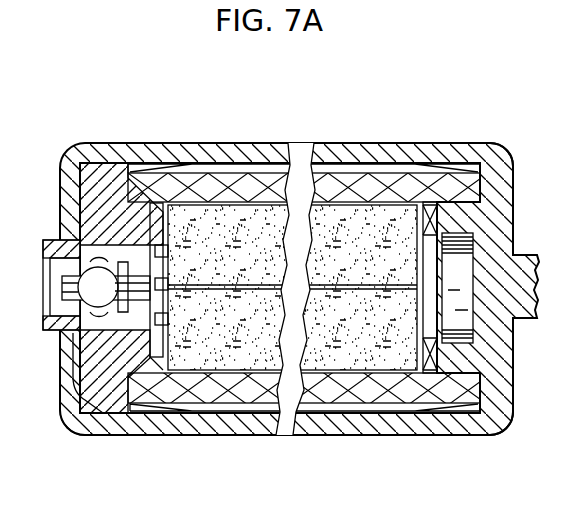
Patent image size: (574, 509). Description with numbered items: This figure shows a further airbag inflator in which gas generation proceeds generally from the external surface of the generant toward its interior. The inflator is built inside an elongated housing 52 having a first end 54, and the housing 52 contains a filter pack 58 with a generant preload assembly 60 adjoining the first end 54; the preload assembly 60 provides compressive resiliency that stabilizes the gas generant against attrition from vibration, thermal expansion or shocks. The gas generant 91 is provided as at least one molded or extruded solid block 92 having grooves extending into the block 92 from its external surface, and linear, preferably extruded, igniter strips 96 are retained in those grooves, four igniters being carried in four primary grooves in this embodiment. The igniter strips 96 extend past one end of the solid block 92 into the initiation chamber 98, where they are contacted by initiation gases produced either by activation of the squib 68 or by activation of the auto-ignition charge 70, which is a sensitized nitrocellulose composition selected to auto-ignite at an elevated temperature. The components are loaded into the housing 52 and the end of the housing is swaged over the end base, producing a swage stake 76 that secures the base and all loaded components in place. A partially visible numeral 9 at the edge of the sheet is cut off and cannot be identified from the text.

The elongated housing 52 is at (328, 157).
The first end 54 is at (513, 164).
The filter pack 58 is at (258, 172).
The generant preload assembly 60 is at (510, 224).
The squib 68 is at (138, 238).
The auto-ignition charge 70 is at (106, 322).
The swage stake 76 is at (77, 411).
The gas generant 91 is at (330, 225).
The solid block 92 is at (400, 214).
The igniter strips 96 is at (135, 411).
The initiation chamber 98 is at (150, 222).
The partial numeral 9 is at (564, 373).